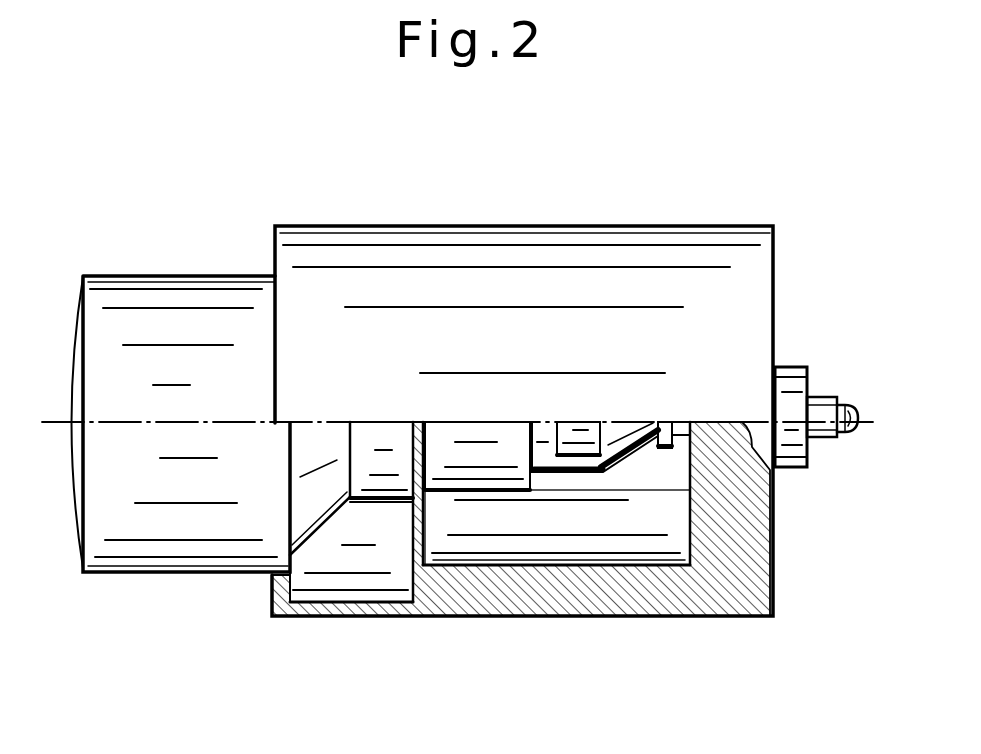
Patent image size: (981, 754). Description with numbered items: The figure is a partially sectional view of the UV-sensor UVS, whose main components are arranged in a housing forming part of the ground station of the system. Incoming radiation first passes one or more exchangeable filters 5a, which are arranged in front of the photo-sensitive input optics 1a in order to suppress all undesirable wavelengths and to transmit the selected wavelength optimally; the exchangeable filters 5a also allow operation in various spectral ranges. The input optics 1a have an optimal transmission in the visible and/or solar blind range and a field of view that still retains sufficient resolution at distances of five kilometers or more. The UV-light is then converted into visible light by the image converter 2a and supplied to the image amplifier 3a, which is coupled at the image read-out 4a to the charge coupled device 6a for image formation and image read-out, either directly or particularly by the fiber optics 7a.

The UV-sensor UVS is at (611, 215).
The exchangeable filters 5a is at (173, 315).
The input optics 1a is at (333, 447).
The image converter 2a is at (358, 557).
The image amplifier 3a is at (480, 468).
The image read-out 4a is at (643, 503).
The charge coupled device 6a is at (665, 418).
The fiber optics 7a is at (849, 404).